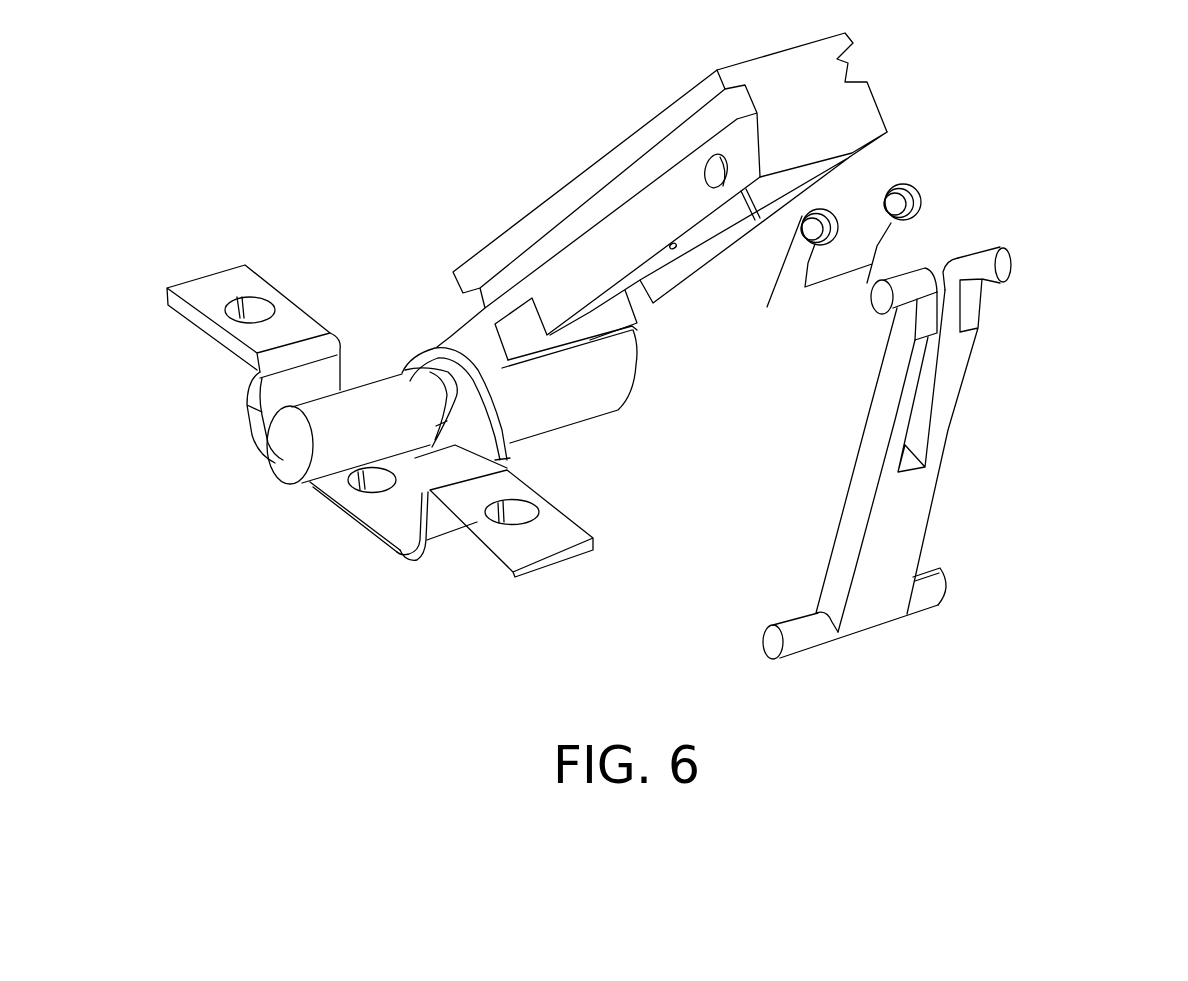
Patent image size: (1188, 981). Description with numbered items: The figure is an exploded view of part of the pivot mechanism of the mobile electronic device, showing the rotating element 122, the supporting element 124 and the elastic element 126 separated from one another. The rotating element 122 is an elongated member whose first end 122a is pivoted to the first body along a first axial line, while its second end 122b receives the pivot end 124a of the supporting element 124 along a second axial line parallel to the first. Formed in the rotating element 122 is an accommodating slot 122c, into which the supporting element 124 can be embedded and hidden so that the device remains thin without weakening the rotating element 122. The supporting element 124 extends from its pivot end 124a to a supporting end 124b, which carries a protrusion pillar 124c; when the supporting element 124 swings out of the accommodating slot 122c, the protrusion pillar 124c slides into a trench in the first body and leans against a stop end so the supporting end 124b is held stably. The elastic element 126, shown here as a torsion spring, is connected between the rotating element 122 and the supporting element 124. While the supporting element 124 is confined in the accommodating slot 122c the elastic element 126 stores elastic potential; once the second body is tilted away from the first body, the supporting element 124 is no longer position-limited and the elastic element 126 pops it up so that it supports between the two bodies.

The rotating element 122 is at (612, 237).
The first end 122a is at (647, 375).
The second end 122b is at (892, 107).
The accommodating slot 122c is at (705, 229).
The supporting element 124 is at (920, 513).
The pivot end 124a is at (1023, 266).
The supporting end 124b is at (975, 592).
The protrusion pillar 124c is at (928, 605).
The elastic element 126 is at (917, 195).